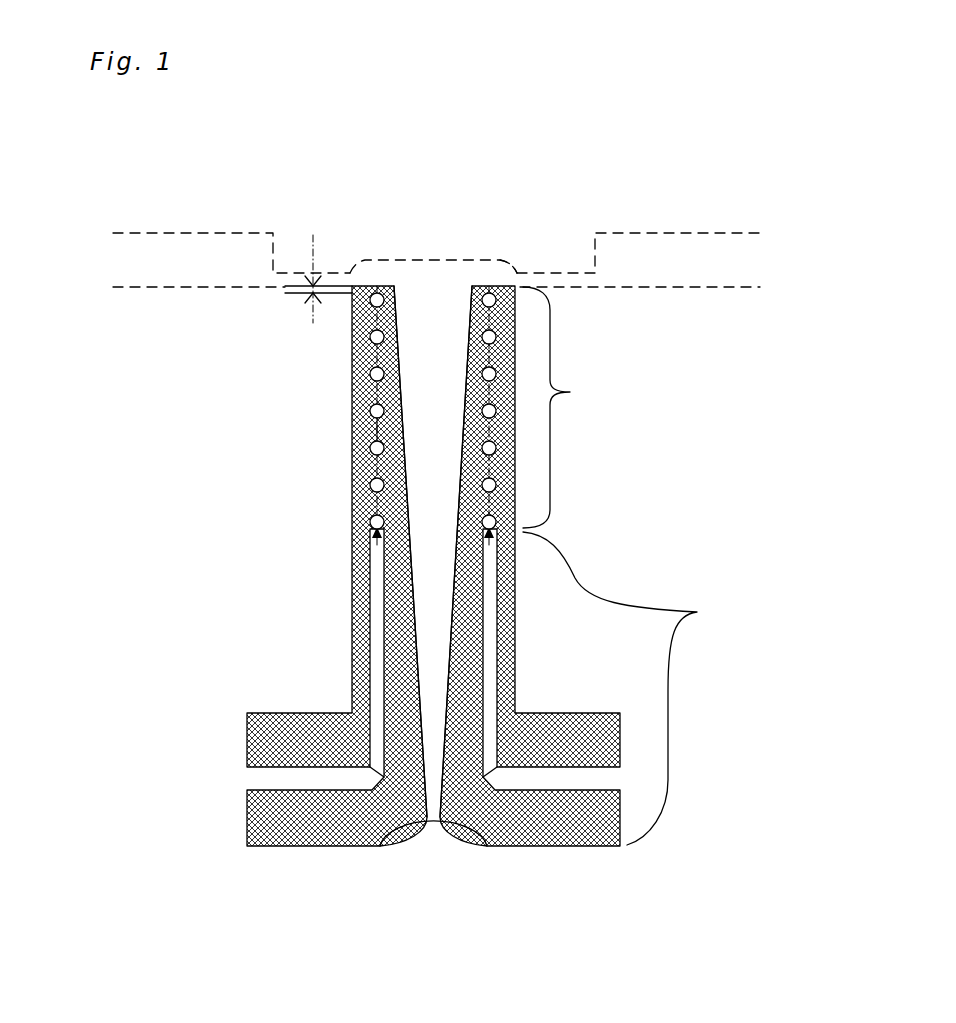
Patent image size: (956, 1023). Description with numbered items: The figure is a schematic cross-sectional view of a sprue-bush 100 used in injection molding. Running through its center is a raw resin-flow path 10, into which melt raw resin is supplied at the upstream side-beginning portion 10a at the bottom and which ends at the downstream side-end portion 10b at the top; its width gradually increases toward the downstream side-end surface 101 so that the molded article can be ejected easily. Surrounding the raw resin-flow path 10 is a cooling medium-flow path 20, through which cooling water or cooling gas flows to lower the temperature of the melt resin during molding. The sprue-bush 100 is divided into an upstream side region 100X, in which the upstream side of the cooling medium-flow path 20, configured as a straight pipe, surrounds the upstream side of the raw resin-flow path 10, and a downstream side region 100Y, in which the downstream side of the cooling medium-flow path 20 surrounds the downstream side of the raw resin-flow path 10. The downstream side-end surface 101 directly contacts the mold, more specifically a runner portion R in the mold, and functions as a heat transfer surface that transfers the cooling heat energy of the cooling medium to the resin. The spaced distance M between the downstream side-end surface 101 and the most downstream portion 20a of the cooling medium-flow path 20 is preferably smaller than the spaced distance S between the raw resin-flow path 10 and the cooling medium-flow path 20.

The raw resin-flow path 10 is at (405, 500).
The upstream side-beginning portion 10a is at (432, 822).
The downstream side-end portion 10b is at (433, 284).
The cooling medium-flow path 20 is at (366, 412).
The most downstream portion 20a is at (369, 296).
The spaced distance S is at (391, 446).
The spaced distance M is at (306, 279).
The sprue-bush 100 is at (535, 263).
The downstream side-end surface 101 is at (370, 284).
The runner portion R is at (472, 273).
The downstream side region 100Y is at (578, 407).
The upstream side region 100X is at (645, 688).